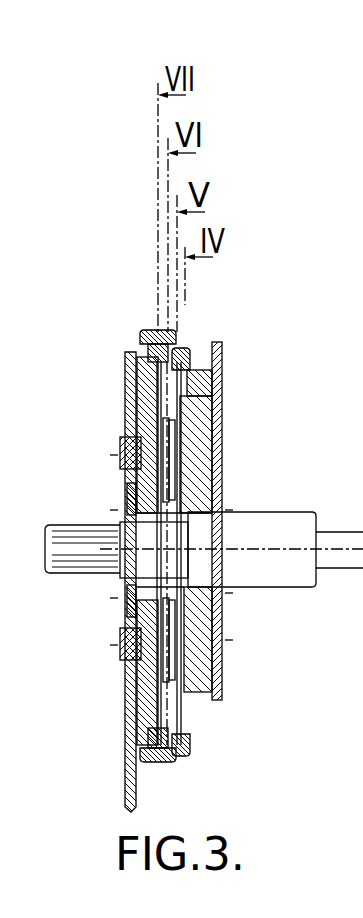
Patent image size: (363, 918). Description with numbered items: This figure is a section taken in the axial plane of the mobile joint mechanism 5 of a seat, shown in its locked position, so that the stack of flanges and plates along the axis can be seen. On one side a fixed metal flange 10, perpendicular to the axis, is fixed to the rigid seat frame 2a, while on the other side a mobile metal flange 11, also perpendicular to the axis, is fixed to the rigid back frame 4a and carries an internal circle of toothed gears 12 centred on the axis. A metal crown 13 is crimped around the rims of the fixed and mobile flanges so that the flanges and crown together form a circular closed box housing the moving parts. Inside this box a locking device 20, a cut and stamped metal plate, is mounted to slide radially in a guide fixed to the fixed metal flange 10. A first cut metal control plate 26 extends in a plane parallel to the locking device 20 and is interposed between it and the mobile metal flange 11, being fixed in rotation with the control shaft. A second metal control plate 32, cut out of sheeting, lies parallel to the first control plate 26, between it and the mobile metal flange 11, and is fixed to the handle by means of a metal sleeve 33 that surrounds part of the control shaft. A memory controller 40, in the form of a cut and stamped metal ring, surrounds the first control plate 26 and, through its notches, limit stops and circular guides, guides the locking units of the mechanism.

The clutch assembly 5 is at (247, 320).
The metal crown 13 is at (185, 352).
The rigid back frame 4a is at (222, 357).
The toothed gears 12 is at (200, 396).
The mobile metal flange 11 is at (216, 459).
The metal sleeve 33 is at (264, 518).
The memory controller 40 is at (128, 366).
The locking device 20 is at (133, 412).
The fixed metal flange 10 is at (128, 455).
The first control plate 26 is at (176, 619).
The second control plate 32 is at (174, 637).
The rigid seat frame 2a is at (125, 781).